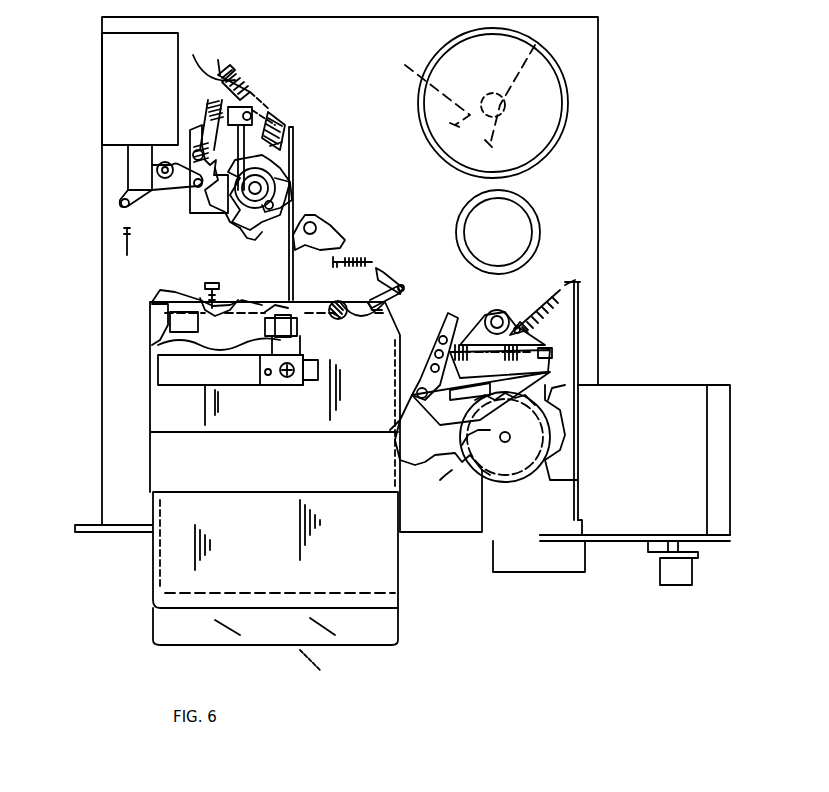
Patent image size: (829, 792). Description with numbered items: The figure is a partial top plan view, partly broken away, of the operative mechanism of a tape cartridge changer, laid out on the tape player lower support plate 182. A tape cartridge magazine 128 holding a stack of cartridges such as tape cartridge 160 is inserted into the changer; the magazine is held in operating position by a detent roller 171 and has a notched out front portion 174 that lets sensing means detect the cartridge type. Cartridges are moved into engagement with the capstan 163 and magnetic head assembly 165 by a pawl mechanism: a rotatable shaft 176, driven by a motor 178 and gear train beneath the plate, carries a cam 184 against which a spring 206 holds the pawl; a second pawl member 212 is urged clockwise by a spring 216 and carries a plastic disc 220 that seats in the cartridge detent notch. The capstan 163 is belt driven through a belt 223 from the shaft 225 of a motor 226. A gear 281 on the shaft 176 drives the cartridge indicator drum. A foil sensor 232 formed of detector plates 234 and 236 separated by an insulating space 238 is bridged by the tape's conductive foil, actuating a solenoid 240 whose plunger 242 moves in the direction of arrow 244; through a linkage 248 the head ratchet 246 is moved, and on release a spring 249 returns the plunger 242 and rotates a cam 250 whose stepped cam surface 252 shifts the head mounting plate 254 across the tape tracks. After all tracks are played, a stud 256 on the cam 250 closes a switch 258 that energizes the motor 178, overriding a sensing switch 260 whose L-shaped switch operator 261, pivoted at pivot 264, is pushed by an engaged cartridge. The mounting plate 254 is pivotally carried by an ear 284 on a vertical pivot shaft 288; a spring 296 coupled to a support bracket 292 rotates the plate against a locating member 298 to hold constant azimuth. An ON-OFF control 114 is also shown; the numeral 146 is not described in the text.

The ON-OFF control 114 is at (675, 590).
The tape cartridge magazine 128 is at (408, 561).
The lower tray 146 is at (380, 645).
The tape cartridge 160 is at (175, 563).
The capstan 163 is at (332, 305).
The magnetic head assembly 165 is at (283, 266).
The detent roller 171 is at (300, 330).
The notched out front portion 174 is at (150, 325).
The shaft 176 is at (510, 438).
The motor 178 is at (540, 232).
The lower support plate 182 is at (580, 160).
The cam 184 is at (562, 518).
The spring 206 is at (548, 297).
The second pawl member 212 is at (450, 325).
The spring 216 is at (462, 345).
The plastic disc 220 is at (405, 470).
The belt 223 is at (425, 83).
The motor shaft 225 is at (540, 48).
The motor 226 is at (570, 105).
The foil sensor 232 is at (218, 270).
The detector plate 234 is at (205, 305).
The detector plate 236 is at (236, 305).
The insulating space 238 is at (220, 300).
The solenoid 240 is at (118, 68).
The plunger 242 is at (130, 175).
The arrow 244 is at (125, 245).
The head ratchet 246 is at (210, 222).
The linkage 248 is at (165, 192).
The spring 249 is at (208, 112).
The cam 250 is at (233, 230).
The stepped cam surface 252 is at (263, 238).
The mounting plate 254 is at (295, 137).
The stud 256 is at (275, 178).
The switch 258 is at (247, 108).
The sensing switch 260 is at (398, 280).
The switch operator 261 is at (400, 296).
The pivot 264 is at (403, 280).
The gear 281 is at (565, 425).
The ear 284 is at (272, 192).
The vertical pivot shaft 288 is at (274, 206).
The support bracket 292 is at (232, 70).
The spring 296 is at (212, 57).
The locating member 298 is at (285, 118).